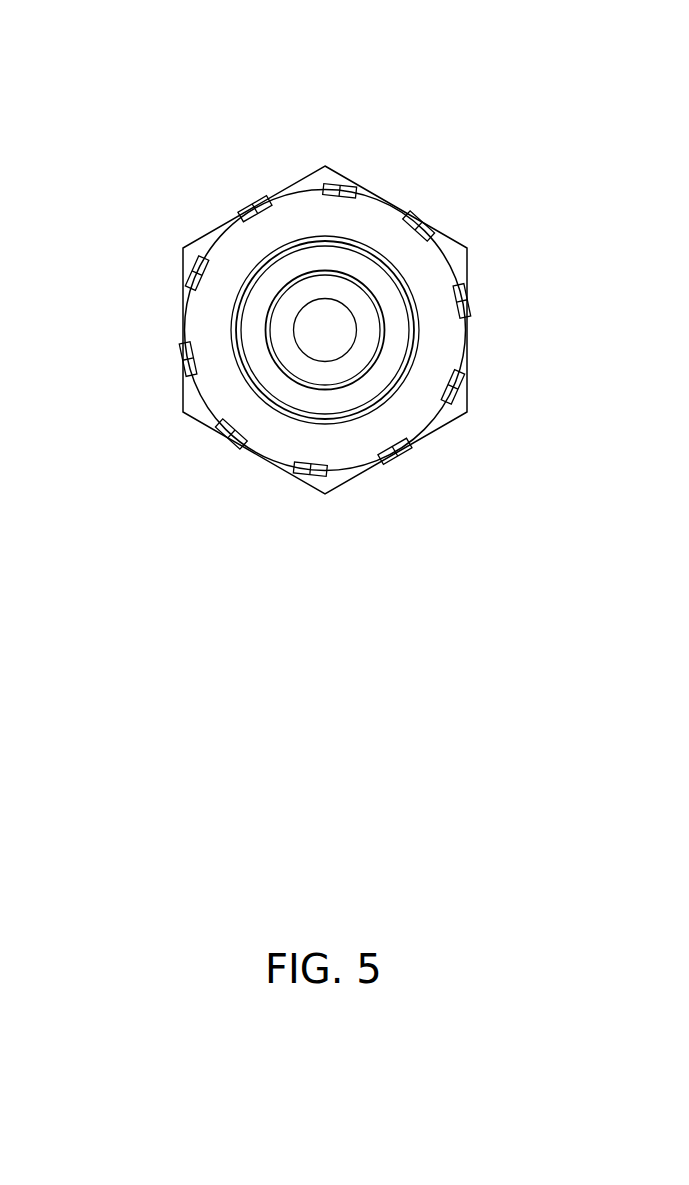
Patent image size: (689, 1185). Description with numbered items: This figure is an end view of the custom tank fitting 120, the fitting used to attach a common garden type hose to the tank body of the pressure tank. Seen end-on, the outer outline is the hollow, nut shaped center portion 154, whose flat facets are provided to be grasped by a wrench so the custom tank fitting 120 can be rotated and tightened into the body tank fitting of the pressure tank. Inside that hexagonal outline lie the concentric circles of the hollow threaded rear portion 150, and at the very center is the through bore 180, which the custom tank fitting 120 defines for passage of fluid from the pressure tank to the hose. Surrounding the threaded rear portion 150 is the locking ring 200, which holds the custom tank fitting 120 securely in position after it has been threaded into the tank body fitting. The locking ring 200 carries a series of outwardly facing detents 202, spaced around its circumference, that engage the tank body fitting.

The custom tank fitting 120 is at (58, 36).
The hollow threaded rear portion 150 is at (408, 290).
The nut shaped center portion 154 is at (355, 180).
The through bore 180 is at (315, 333).
The locking ring 200 is at (430, 355).
The outwardly facing detents 202 is at (247, 210).